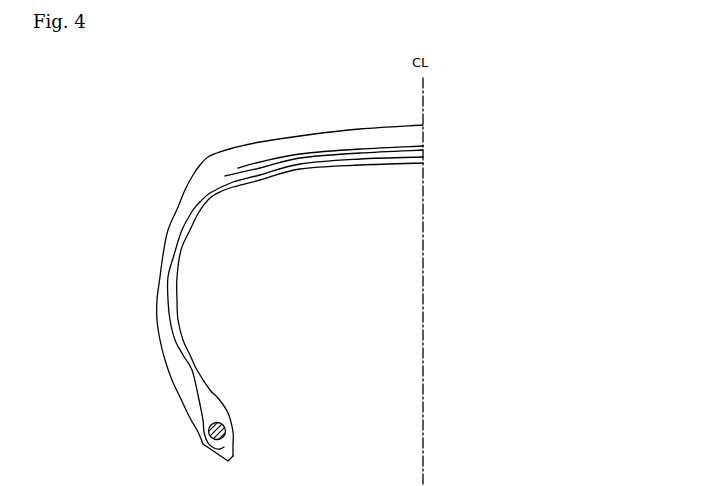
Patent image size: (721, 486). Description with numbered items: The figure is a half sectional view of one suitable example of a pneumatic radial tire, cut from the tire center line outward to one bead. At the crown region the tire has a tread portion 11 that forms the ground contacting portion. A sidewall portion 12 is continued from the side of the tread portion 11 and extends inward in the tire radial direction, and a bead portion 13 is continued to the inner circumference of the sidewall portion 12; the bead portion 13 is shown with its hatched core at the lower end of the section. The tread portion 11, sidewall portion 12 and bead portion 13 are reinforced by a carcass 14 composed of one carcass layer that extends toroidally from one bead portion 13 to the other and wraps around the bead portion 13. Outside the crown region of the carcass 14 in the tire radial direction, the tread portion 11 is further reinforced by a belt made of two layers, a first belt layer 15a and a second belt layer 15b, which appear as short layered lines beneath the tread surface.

The tread portion 11 is at (377, 125).
The sidewall portion 12 is at (160, 277).
The bead portion 13 is at (200, 437).
The carcass 14 is at (170, 317).
The first belt layer 15a is at (332, 157).
The second belt layer 15b is at (295, 157).